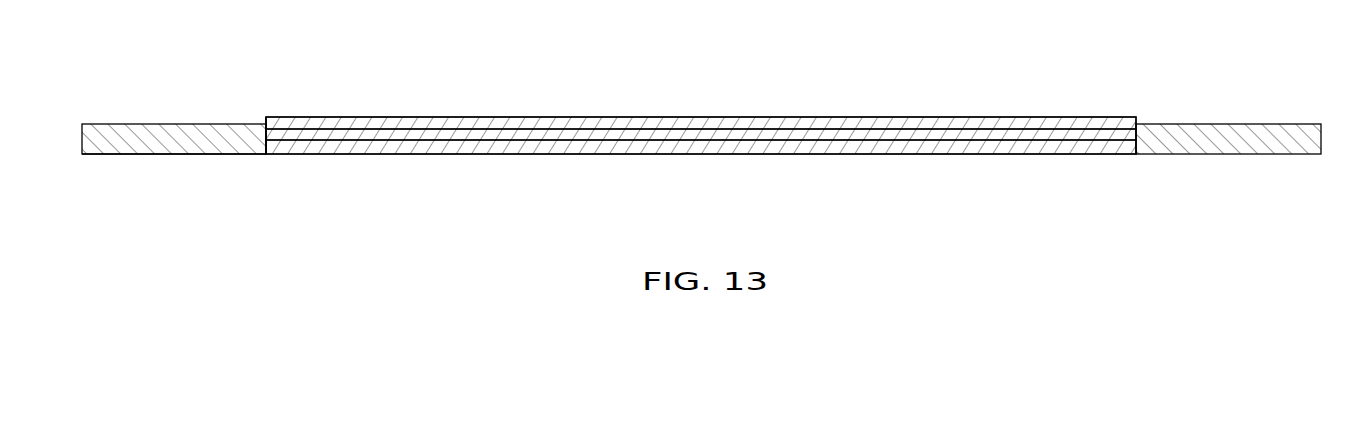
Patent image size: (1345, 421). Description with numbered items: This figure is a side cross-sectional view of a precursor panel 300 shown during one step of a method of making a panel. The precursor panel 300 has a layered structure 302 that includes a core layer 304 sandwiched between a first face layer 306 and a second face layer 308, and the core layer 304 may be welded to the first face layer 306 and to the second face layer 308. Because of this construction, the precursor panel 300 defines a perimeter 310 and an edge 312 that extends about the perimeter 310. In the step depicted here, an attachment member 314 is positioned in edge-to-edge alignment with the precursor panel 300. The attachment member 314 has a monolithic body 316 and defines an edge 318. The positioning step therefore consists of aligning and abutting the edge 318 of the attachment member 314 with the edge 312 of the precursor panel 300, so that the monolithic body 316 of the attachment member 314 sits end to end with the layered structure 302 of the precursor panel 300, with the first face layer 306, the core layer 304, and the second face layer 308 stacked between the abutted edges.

The precursor panel 300 is at (1108, 117).
The layered structure 302 is at (993, 92).
The core layer 304 is at (447, 137).
The first face layer 306 is at (382, 125).
The second face layer 308 is at (475, 147).
The perimeter 310 is at (267, 117).
The edge 312 is at (267, 137).
The attachment member 314 is at (125, 130).
The monolithic body 316 is at (167, 147).
The edge 318 is at (270, 152).